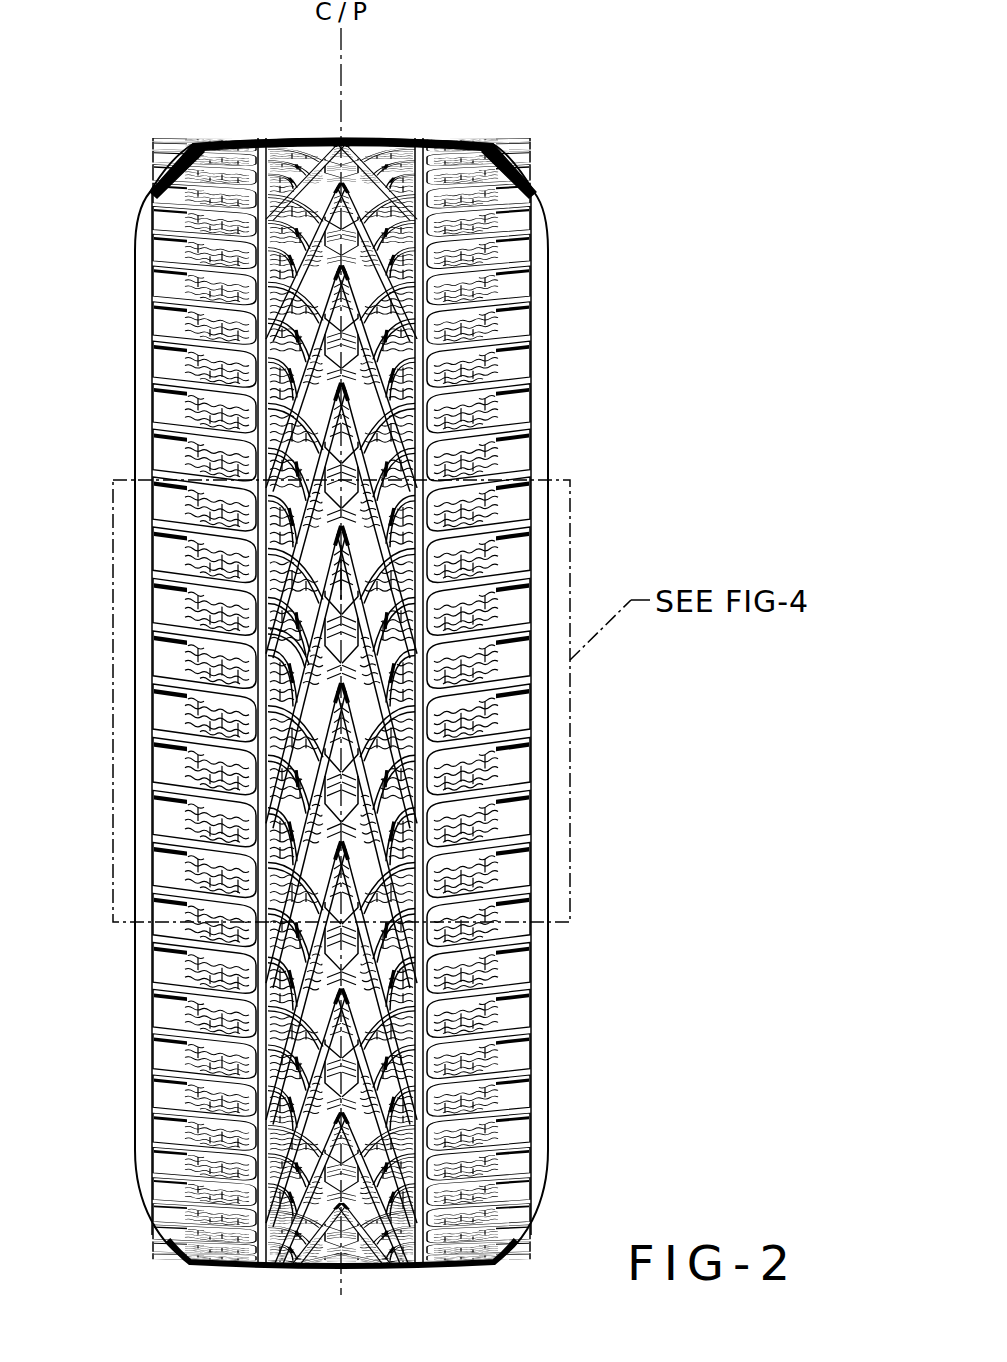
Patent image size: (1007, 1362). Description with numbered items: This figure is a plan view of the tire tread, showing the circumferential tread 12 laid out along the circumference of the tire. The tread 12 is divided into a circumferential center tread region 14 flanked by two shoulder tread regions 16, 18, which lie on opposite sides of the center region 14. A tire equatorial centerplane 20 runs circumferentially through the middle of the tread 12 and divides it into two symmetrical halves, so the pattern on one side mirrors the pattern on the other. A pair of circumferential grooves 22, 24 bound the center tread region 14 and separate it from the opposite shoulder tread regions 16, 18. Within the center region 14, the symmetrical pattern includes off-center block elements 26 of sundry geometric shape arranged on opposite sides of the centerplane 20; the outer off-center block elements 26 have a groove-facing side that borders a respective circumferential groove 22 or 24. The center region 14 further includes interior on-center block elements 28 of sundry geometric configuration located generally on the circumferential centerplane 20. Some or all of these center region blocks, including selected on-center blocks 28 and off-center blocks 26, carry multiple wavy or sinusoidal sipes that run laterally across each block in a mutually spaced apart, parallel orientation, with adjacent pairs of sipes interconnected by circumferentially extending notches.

The circumferential tread 12 is at (493, 149).
The circumferential center tread region 14 is at (369, 136).
The shoulder tread region 16 is at (484, 144).
The shoulder tread region 18 is at (199, 144).
The tire equatorial centerplane 20 is at (341, 48).
The circumferential groove 22 is at (421, 142).
The circumferential groove 24 is at (262, 142).
The off-center block element 26 is at (283, 630).
The on-center block element 28 is at (338, 565).